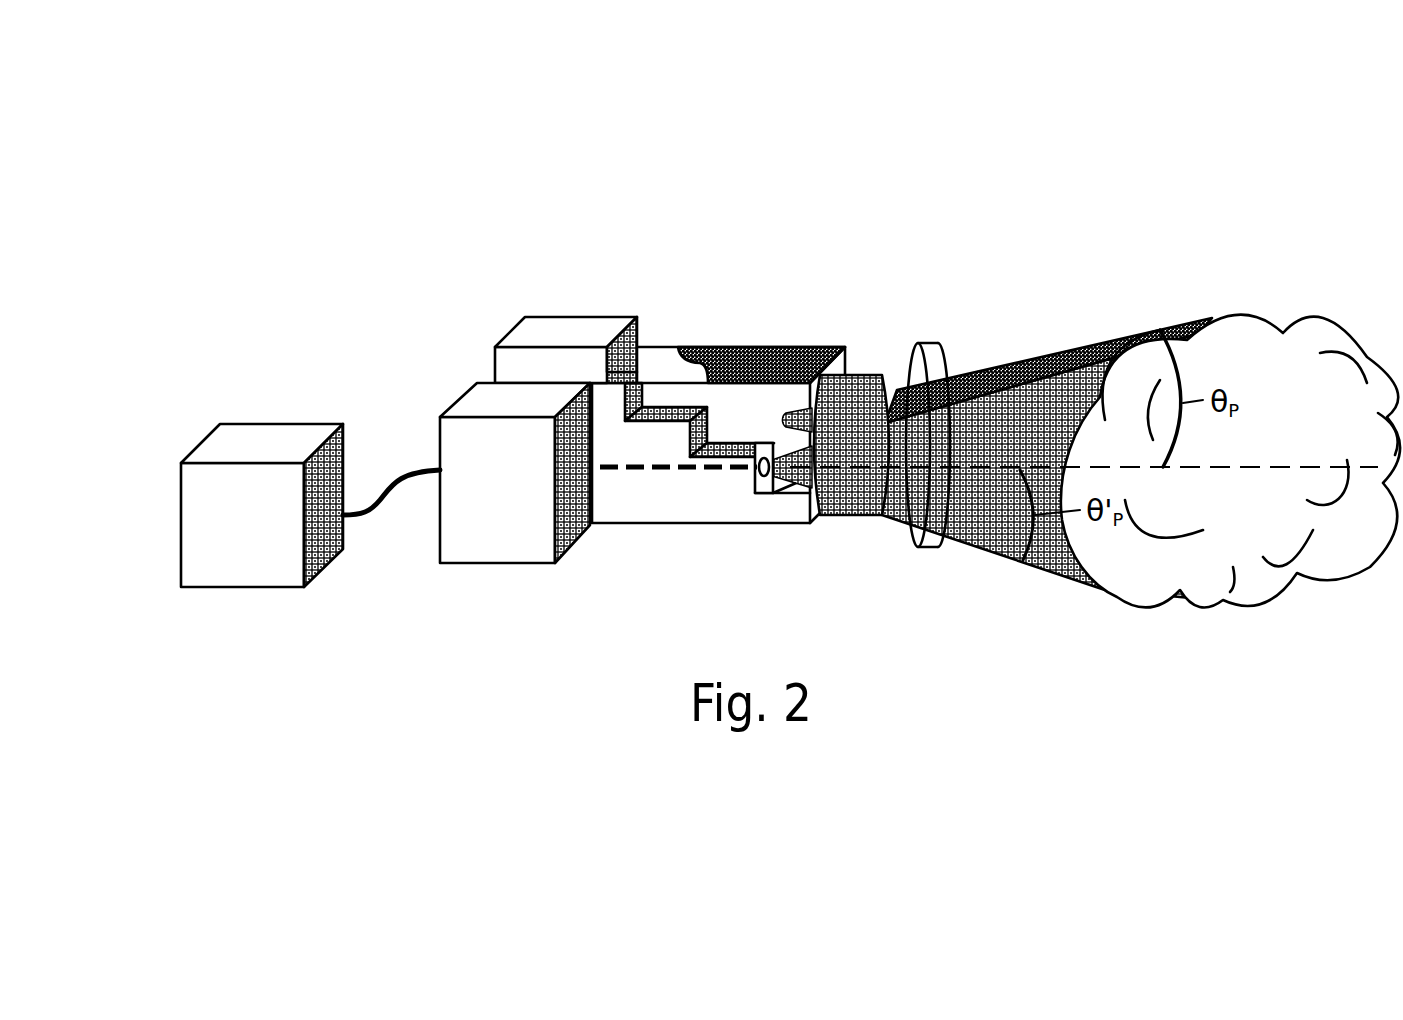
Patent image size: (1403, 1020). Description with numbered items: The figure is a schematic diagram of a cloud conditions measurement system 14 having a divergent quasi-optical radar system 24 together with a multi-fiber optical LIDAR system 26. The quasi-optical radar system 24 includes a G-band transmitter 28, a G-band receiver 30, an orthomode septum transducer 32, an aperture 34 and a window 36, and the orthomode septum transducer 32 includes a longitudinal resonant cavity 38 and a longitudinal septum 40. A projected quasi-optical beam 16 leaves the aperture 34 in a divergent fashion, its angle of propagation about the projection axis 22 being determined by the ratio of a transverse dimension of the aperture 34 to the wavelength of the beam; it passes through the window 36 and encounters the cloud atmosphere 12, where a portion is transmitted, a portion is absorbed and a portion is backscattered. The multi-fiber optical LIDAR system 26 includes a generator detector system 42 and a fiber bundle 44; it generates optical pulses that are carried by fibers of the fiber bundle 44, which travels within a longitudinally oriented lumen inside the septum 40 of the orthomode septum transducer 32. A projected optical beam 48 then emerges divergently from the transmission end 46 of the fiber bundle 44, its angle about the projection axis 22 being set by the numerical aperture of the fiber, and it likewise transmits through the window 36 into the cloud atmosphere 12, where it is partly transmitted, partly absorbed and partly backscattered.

The cloud atmosphere 12 is at (1292, 448).
The cloud conditions measurement system 14 is at (488, 207).
The projected quasi-optical beam 16 is at (1006, 361).
The projection axis 22 is at (1128, 467).
The quasi-optical radar system 24 is at (622, 577).
The multi-fiber optical LIDAR system 26 is at (306, 620).
The G-band transmitter 28 is at (455, 522).
The G-band receiver 30 is at (598, 317).
The orthomode septum transducer 32 is at (757, 313).
The aperture 34 is at (829, 482).
The window 36 is at (928, 343).
The longitudinal resonant cavity 38 is at (828, 347).
The longitudinal septum 40 is at (673, 394).
The generator detector system 42 is at (203, 503).
The fiber bundle 44 is at (398, 475).
The transmission end 46 is at (782, 440).
The projected optical beam 48 is at (1000, 514).